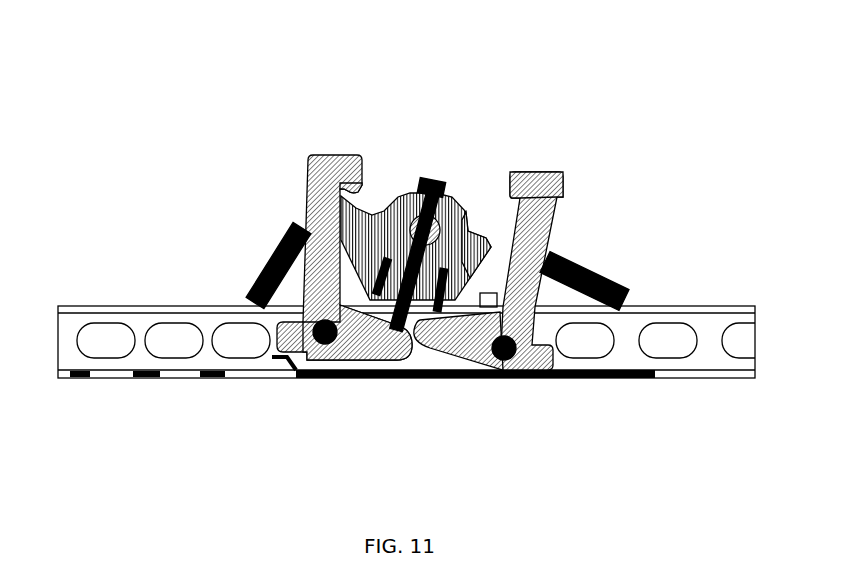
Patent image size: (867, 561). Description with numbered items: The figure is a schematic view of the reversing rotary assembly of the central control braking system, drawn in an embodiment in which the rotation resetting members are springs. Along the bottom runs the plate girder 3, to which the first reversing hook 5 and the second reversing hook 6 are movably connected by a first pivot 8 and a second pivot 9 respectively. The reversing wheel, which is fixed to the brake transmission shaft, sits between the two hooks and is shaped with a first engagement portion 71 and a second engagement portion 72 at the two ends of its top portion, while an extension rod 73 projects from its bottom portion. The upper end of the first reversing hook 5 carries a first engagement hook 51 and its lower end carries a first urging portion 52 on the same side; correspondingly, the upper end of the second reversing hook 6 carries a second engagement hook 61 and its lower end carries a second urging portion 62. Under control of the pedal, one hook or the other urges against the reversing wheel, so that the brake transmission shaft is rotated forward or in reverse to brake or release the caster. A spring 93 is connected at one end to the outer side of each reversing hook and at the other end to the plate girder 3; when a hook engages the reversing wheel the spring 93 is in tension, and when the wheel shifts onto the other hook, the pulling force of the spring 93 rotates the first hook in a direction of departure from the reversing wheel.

The plate girder 3 is at (720, 363).
The first reversing hook 5 is at (320, 193).
The first engagement hook 51 is at (358, 188).
The first urging portion 52 is at (370, 330).
The second reversing hook 6 is at (563, 192).
The second engagement hook 61 is at (532, 183).
The second urging portion 62 is at (465, 325).
The first engagement portion 71 is at (360, 190).
The second engagement portion 72 is at (488, 237).
The extension rod 73 is at (403, 332).
The first pivot 8 is at (318, 347).
The second pivot 9 is at (505, 347).
The spring 93 is at (272, 258).